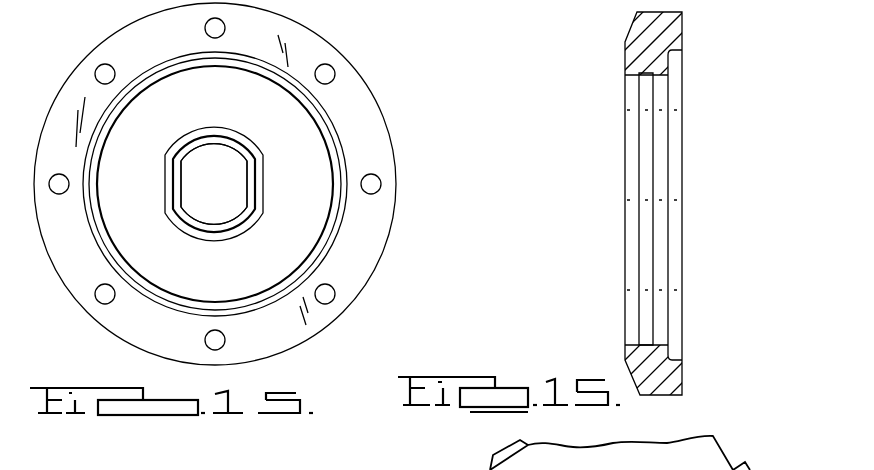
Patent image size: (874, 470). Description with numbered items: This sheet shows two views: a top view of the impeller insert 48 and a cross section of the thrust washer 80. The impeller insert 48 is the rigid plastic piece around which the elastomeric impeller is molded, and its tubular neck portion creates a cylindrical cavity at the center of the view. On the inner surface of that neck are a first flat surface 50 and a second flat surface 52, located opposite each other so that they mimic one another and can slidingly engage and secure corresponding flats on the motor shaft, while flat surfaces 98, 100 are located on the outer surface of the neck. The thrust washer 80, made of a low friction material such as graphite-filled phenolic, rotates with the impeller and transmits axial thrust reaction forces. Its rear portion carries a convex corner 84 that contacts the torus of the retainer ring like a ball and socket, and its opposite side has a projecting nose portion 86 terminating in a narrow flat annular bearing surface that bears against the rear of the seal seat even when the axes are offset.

In FIG. 15, the impeller insert 48 is at (362, 97).
In FIG. 15, the second flat surface 52 is at (165, 159).
In FIG. 15, the flat surface 98 is at (172, 184).
In FIG. 15, the first flat surface 50 is at (262, 155).
In FIG. 15, the flat surface 100 is at (262, 189).
In FIG. 16, the convex corner 84 is at (637, 25).
In FIG. 16, the thrust washer 80 is at (648, 52).
In FIG. 16, the projecting nose portion 86 is at (683, 30).